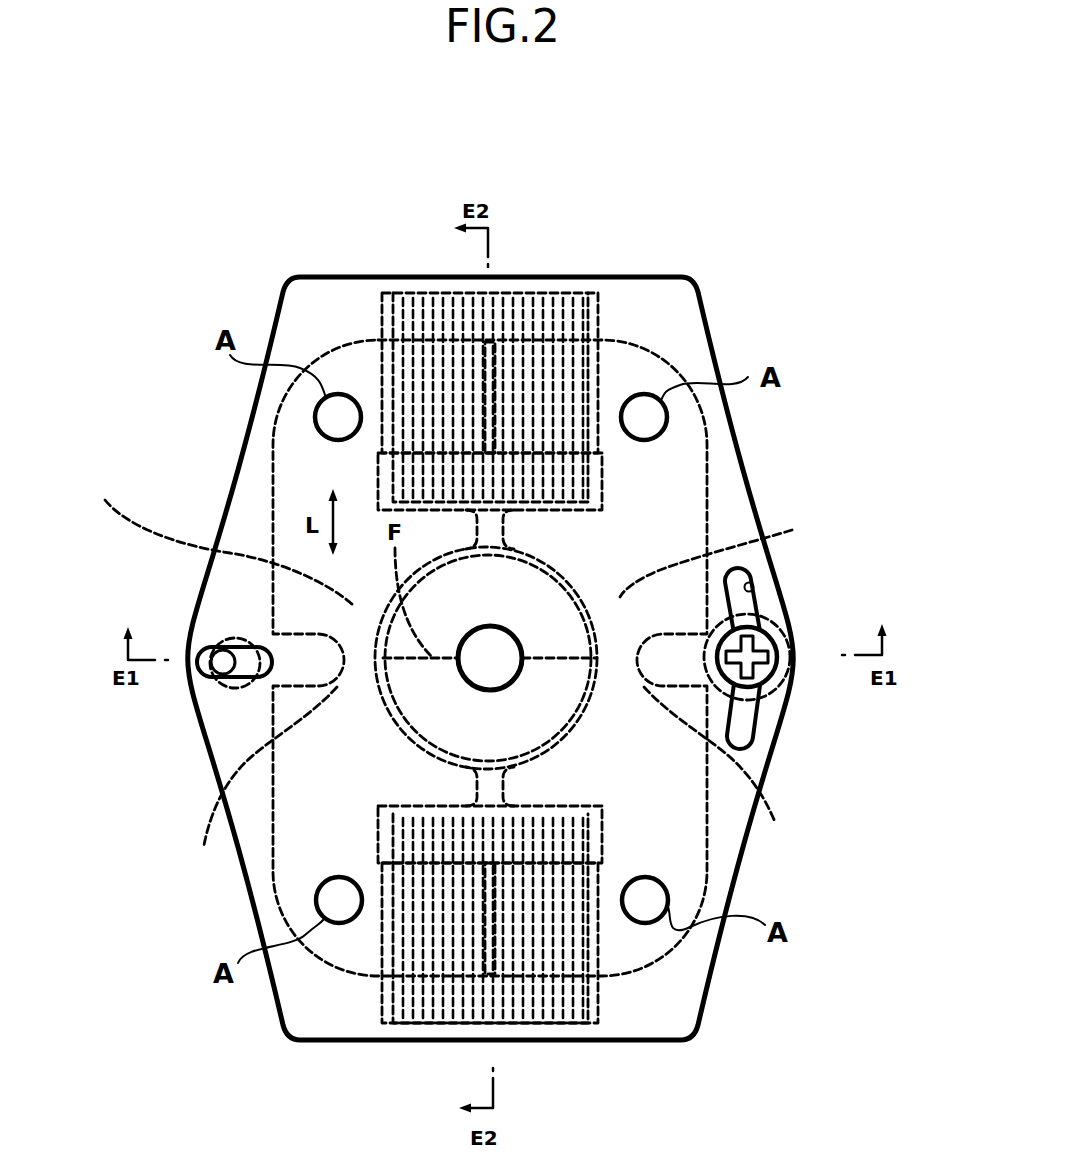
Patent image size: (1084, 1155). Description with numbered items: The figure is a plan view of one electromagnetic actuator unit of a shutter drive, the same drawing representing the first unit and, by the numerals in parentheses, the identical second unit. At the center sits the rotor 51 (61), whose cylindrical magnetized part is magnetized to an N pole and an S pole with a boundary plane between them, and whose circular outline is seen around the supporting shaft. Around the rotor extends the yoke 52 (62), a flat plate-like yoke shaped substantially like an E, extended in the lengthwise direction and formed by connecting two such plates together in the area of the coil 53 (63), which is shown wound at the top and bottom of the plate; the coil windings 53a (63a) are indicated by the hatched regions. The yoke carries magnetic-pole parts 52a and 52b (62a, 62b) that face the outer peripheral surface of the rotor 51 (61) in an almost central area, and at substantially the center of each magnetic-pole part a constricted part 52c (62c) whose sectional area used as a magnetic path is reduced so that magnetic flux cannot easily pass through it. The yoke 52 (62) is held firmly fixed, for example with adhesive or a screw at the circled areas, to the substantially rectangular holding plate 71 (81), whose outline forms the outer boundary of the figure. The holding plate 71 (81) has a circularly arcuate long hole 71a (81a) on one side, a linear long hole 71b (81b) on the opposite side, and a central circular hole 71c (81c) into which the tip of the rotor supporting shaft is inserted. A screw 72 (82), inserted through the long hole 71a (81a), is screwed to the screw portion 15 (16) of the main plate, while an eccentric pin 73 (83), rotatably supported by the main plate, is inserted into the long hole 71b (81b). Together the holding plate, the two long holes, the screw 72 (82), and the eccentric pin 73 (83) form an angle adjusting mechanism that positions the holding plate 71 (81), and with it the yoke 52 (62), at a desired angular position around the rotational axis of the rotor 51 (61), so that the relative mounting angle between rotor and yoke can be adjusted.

The screw portion 15 is at (816, 662).
The screw portion 16 is at (762, 704).
The rotor 51 is at (452, 693).
The rotor 61 is at (389, 721).
The yoke 52 is at (519, 658).
The yoke 62 is at (268, 490).
The magnetic-pole part 52a is at (215, 536).
The magnetic-pole part 62a is at (215, 536).
The magnetic-pole part 52b is at (771, 547).
The magnetic-pole part 62b is at (771, 547).
The constricted part 52c is at (523, 800).
The constricted part 62c is at (523, 800).
The coil 53 is at (577, 633).
The coil 63 is at (577, 633).
The coil bobbin 53a is at (585, 616).
The coil bobbin 63a is at (592, 293).
The holding plate 71 is at (491, 607).
The holding plate 81 is at (669, 272).
The circularly arcuate long hole 71a is at (841, 572).
The circularly arcuate long hole 81a is at (755, 585).
The linear long hole 71b is at (195, 730).
The linear long hole 81b is at (229, 679).
The circular hole 71c is at (574, 713).
The circular hole 81c is at (517, 673).
The screw 72 is at (809, 644).
The screw 82 is at (764, 634).
The eccentric pin 73 is at (146, 604).
The eccentric pin 83 is at (216, 650).